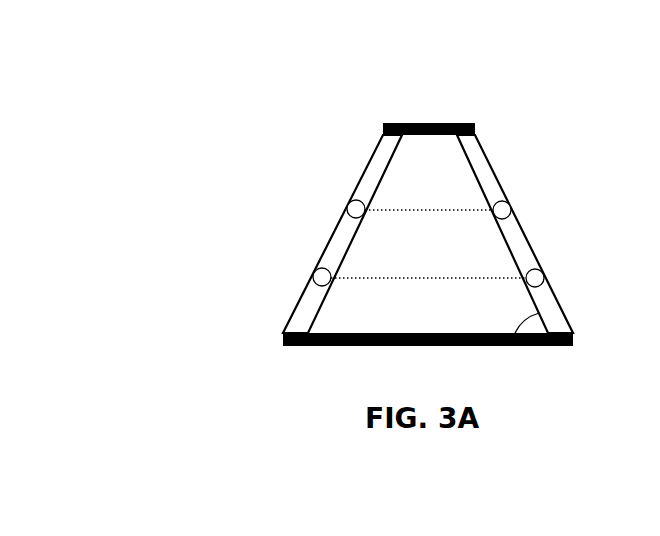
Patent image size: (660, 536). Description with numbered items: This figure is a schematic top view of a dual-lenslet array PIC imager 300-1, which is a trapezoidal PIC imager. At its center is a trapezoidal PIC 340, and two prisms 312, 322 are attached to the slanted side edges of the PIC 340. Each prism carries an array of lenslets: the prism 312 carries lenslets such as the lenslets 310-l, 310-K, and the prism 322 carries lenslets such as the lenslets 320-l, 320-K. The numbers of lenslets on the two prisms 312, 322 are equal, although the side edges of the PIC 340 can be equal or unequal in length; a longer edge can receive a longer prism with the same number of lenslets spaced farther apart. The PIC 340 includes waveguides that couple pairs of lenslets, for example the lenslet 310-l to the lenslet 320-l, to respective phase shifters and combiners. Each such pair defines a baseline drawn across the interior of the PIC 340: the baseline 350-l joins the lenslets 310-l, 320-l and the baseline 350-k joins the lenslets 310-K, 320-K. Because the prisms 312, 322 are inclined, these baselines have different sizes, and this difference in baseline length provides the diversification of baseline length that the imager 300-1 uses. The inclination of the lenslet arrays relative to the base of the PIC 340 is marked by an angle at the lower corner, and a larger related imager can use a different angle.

The dual-lenslet array PIC imager 300-1 is at (427, 194).
The prism 312 is at (372, 172).
The prism 322 is at (485, 142).
The lenslet 310-l is at (350, 205).
The lenslet 310-K is at (314, 272).
The lenslet 320-l is at (506, 203).
The lenslet 320-K is at (542, 274).
The PIC 340 is at (456, 176).
The baseline 350-l is at (440, 211).
The baseline 350-k is at (477, 279).